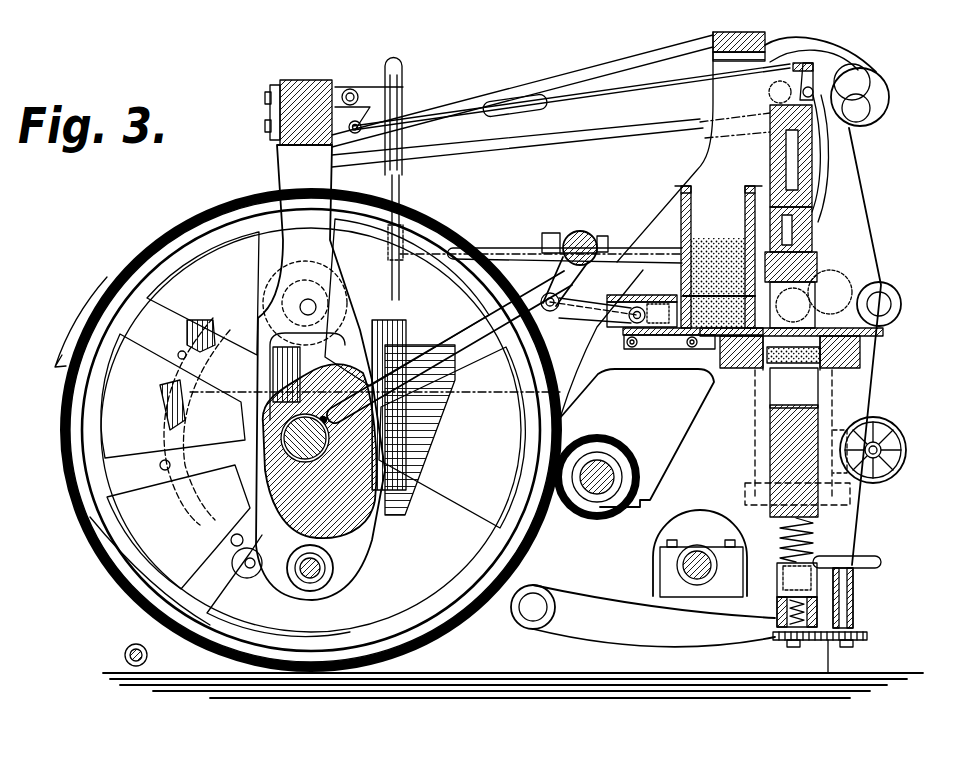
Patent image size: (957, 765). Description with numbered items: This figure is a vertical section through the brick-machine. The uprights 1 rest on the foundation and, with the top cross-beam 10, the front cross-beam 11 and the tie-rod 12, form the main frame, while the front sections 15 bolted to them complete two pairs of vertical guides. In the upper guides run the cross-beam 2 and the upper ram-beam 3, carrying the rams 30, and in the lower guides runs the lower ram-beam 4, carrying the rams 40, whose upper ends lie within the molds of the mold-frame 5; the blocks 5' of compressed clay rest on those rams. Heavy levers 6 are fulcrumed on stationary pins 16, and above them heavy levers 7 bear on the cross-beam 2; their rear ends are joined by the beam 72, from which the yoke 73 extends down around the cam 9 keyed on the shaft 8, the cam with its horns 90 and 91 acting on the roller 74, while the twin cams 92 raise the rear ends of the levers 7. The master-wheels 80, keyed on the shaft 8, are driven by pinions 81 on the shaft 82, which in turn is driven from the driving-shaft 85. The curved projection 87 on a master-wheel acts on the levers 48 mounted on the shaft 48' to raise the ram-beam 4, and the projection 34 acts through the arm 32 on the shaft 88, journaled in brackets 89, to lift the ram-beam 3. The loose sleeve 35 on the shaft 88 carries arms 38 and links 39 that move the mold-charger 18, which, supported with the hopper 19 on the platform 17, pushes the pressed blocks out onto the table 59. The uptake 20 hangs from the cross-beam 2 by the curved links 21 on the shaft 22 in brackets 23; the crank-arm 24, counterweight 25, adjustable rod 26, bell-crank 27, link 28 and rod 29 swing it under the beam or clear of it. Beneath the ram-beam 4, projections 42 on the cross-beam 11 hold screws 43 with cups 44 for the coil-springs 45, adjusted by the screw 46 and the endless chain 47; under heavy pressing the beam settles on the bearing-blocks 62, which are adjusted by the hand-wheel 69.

The uprights 1 is at (700, 428).
The cross-beam 2 is at (770, 158).
The upper ram-beam 3 is at (817, 265).
The lower ram-beam 4 is at (818, 418).
The mold-frame 5 is at (790, 364).
The blocks of compressed clay 5' is at (793, 372).
The heavy levers 6 is at (510, 262).
The heavy levers 7 is at (548, 78).
The shaft 8 is at (305, 438).
The cam 9 is at (264, 432).
The top cross-beam 10 is at (760, 45).
The front cross-beam 11 is at (853, 602).
The tie-rod 12 is at (128, 648).
The sections 15 is at (836, 317).
The stationary pins 16 is at (879, 304).
The platform 17 is at (677, 346).
The mold-charger 18 is at (622, 313).
The hopper 19 is at (718, 257).
The uptake 20 is at (812, 237).
The curved links 21 is at (822, 183).
The shaft 22 is at (791, 59).
The brackets 23 is at (812, 100).
The crank-arm 24 is at (813, 75).
The counterweight 25 is at (852, 78).
The adjustable rod 26 is at (628, 92).
The bell-crank 27 is at (360, 92).
The link 28 is at (404, 70).
The rod 29 is at (399, 266).
The rams 30 is at (811, 299).
The arm 32 is at (449, 347).
The projection 34 is at (190, 522).
The loose sleeve 35 is at (595, 240).
The arms 38 is at (570, 283).
The links 39 is at (606, 327).
The rams 40 is at (770, 400).
The projections 42 is at (777, 608).
The screws 43 is at (813, 653).
The cups 44 is at (777, 578).
The heavy coil-springs 45 is at (782, 548).
The screw 46 is at (870, 568).
The endless chain 47 is at (868, 637).
The levers 48 is at (654, 616).
The shaft 48' is at (533, 607).
The plate 59 is at (883, 341).
The bearing-blocks 62 is at (768, 472).
The hand-wheel 69 is at (906, 437).
The heavy beam 72 is at (298, 101).
The yoke 73 is at (248, 336).
The roller 74 is at (310, 594).
The master-wheels 80 is at (470, 245).
The pinions 81 is at (632, 455).
The shaft 82 is at (597, 460).
The driving-shaft 85 is at (700, 553).
The curved projection 87 is at (160, 390).
The shaft 88 is at (578, 238).
The brackets 89 is at (578, 312).
The horn 90 is at (258, 582).
The horn 91 is at (372, 365).
The twin cams 92 is at (453, 459).